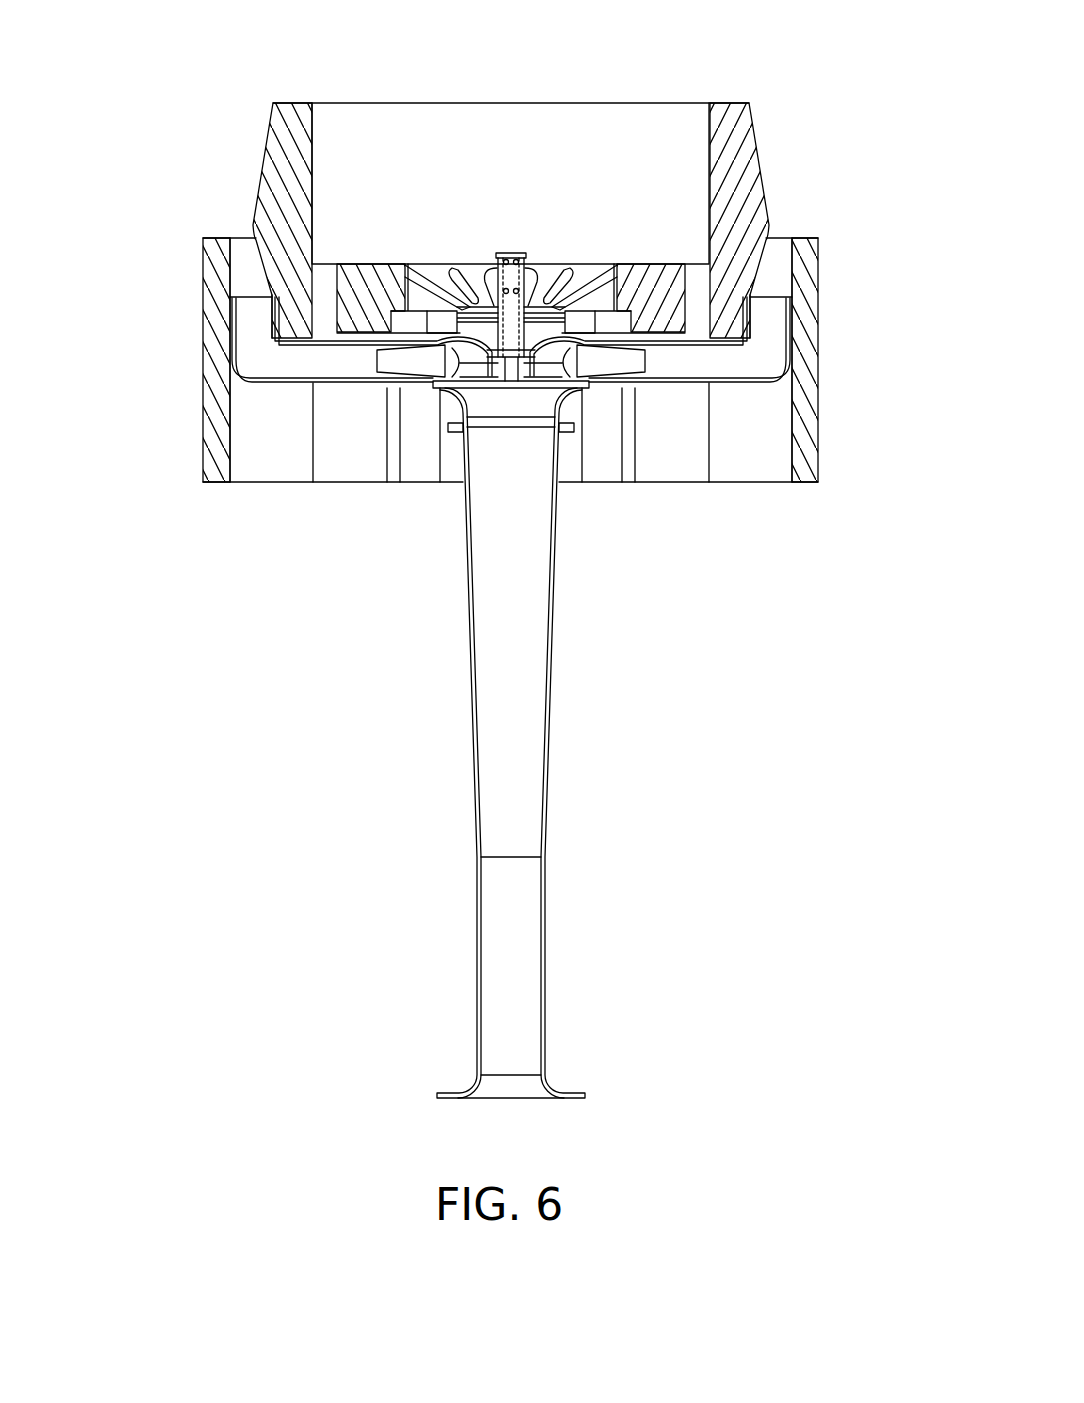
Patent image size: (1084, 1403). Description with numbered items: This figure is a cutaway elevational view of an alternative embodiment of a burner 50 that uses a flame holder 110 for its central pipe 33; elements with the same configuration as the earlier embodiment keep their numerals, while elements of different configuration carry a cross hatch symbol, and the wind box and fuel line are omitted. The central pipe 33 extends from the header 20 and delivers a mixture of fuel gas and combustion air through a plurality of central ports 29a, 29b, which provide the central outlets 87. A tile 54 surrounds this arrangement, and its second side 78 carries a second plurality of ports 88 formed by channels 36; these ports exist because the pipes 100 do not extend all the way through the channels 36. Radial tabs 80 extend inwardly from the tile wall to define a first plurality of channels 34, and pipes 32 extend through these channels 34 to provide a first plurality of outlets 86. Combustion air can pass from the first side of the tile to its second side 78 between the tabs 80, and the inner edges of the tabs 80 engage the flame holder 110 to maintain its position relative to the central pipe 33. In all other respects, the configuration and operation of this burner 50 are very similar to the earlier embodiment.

The burner 50 is at (234, 141).
The second side of the tile 78 is at (527, 99).
The tile 54 is at (263, 462).
The channels 36 is at (238, 263).
The second plurality of ports 88 is at (238, 238).
The first plurality of channels 34 is at (312, 282).
The first plurality of outlets 86 is at (325, 322).
The pipes 100 is at (247, 318).
The pipes 32 is at (325, 323).
The radial tabs 80 is at (352, 318).
The flame holder 110 is at (430, 264).
The central pipe 33 is at (575, 288).
The central port 29b is at (498, 262).
The central outlets 87 is at (519, 230).
The central port 29a is at (510, 318).
The header 20 is at (632, 412).